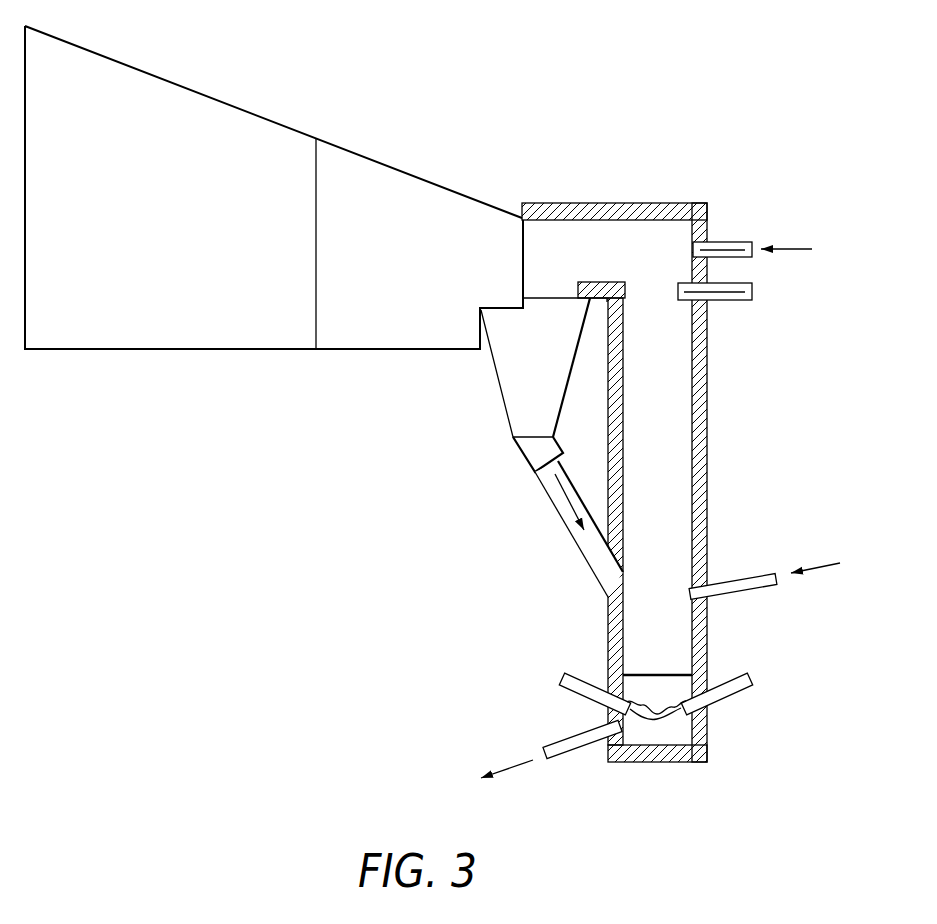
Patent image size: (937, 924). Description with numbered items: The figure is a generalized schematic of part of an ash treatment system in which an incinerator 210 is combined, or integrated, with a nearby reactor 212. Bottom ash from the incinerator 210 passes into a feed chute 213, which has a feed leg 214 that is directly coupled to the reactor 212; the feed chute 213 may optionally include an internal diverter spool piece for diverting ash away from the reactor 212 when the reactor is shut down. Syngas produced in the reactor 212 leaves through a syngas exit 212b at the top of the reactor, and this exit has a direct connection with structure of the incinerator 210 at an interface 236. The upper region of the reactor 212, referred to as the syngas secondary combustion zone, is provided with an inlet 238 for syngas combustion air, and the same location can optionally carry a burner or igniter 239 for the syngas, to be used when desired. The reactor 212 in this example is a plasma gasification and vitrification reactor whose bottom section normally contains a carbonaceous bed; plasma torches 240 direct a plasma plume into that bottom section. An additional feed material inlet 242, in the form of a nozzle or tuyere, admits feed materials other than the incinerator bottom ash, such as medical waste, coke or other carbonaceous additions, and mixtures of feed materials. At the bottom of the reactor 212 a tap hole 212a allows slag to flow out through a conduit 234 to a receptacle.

The incinerator 210 is at (398, 117).
The reactor 212 is at (729, 408).
The tap hole 212a is at (607, 732).
The syngas exit 212b is at (608, 242).
The feed chute 213 is at (500, 388).
The feed leg 214 is at (565, 512).
The conduit 234 is at (572, 760).
The interface 236 is at (521, 206).
The inlet 238 is at (737, 241).
The igniter 239 is at (728, 302).
The plasma torches 240 is at (583, 677).
The feed material inlet 242 is at (732, 582).